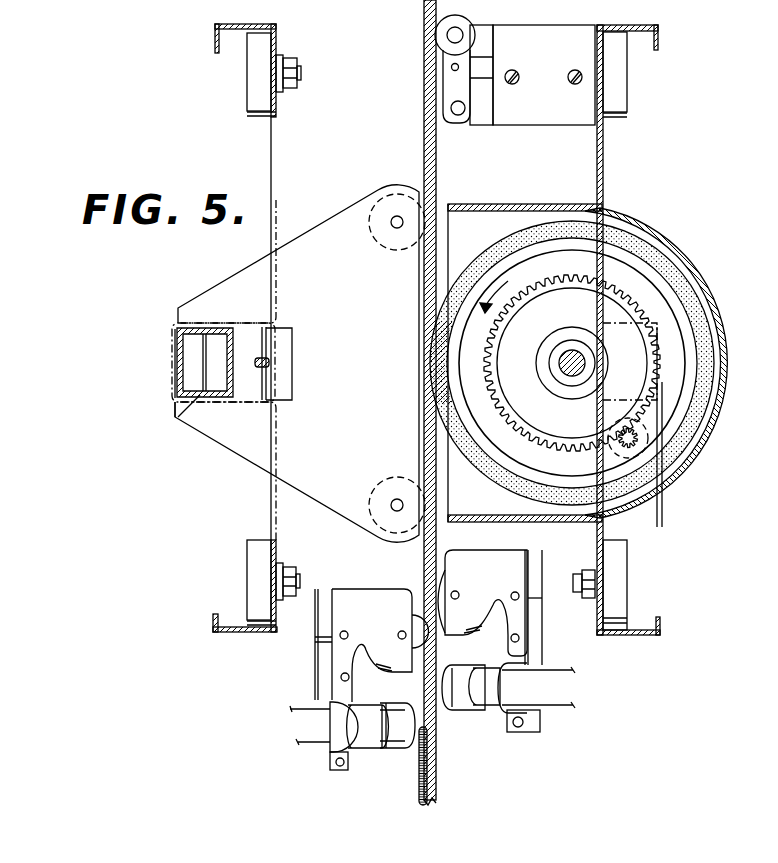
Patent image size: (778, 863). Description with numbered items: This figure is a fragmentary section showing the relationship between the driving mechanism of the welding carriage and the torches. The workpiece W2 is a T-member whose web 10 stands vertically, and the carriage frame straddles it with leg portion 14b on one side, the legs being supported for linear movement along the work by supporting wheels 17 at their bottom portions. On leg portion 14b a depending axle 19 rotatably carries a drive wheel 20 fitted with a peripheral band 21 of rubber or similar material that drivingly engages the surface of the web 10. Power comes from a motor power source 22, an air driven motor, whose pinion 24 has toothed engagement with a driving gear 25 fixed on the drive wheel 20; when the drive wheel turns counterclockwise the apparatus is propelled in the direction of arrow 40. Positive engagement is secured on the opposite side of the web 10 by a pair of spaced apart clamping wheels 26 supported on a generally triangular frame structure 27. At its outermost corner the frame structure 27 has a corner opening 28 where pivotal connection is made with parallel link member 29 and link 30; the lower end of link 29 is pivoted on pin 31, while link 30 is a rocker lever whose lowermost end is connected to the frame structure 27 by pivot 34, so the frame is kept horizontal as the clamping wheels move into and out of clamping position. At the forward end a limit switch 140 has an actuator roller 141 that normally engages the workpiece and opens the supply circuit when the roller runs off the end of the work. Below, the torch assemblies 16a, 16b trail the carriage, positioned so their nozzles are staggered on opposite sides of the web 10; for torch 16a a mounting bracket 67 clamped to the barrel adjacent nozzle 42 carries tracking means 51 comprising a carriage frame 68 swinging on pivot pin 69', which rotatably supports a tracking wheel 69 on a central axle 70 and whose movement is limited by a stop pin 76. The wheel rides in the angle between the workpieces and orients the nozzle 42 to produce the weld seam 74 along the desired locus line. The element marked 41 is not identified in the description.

The web 10 is at (424, 151).
The workpiece W2 is at (406, 12).
The arrow 40 is at (398, 30).
The supporting wheels 17 is at (253, 63).
The leg portion 14b is at (604, 158).
The limit switch 140 is at (550, 134).
The actuator roller 141 is at (468, 20).
The frame structure 27 is at (311, 243).
The clamping wheels 26 is at (418, 226).
The link 30 is at (176, 362).
The pivot 34 is at (178, 417).
The pin 31 is at (266, 384).
The corner opening 28 is at (286, 341).
The link member 29 is at (270, 362).
The motor power source 22 is at (670, 488).
The peripheral band 21 is at (683, 277).
The drive wheel 20 is at (675, 353).
The driving gear 25 is at (612, 314).
The axle 19 is at (571, 371).
The pinion 24 is at (633, 441).
The tracking means 51 is at (333, 585).
The carriage frame 68 is at (348, 590).
The tracking wheel 69 is at (415, 595).
The central axle 70 is at (401, 631).
The stop pin 76 is at (318, 643).
The pivot pin 69' is at (301, 689).
The torch assembly 16a is at (303, 757).
The mounting bracket 67 is at (322, 756).
The collar 41 is at (368, 735).
The nozzle 42 is at (399, 741).
The torch assembly 16b is at (498, 727).
The weld seam 74 is at (422, 805).